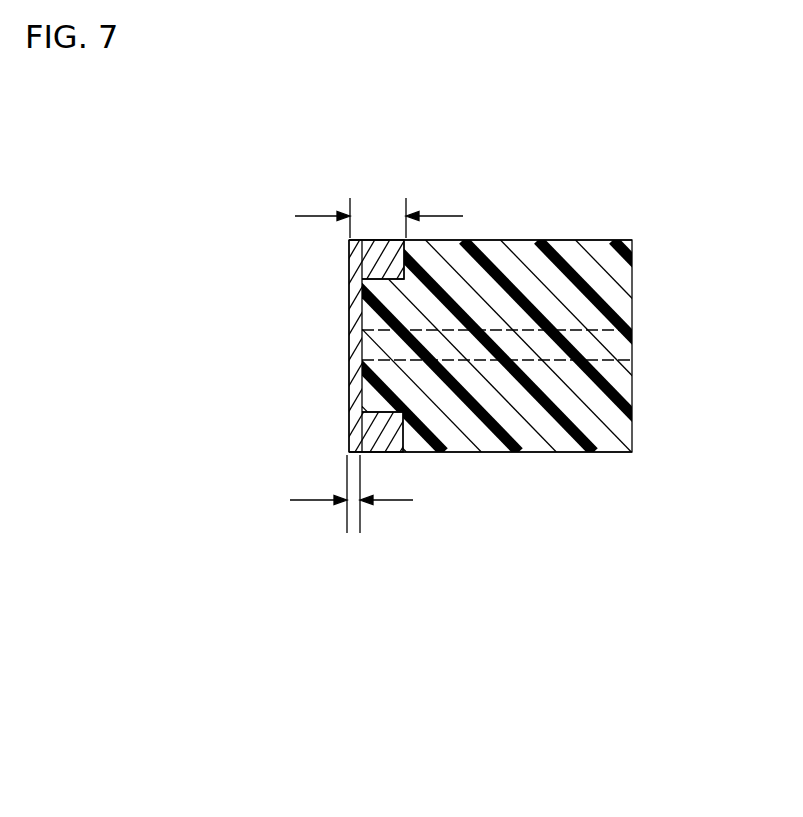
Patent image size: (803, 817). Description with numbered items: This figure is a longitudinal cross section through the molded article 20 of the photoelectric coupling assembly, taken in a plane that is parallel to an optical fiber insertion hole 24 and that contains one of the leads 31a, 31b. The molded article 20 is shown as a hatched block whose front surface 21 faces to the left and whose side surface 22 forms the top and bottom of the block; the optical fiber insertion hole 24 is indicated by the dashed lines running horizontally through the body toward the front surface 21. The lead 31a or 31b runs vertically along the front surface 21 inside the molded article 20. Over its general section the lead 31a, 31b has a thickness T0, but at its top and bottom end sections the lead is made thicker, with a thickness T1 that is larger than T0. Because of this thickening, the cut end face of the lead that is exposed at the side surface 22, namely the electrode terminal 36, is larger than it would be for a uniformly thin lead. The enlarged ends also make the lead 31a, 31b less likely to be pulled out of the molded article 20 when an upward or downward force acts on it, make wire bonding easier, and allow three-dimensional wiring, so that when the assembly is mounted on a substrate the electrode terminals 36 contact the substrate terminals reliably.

The main unit (molded article) 20 is at (502, 330).
The front surface 21 is at (350, 288).
The side surface 22 is at (527, 240).
The optical fiber insertion hole 24 is at (620, 345).
The lead 31a is at (350, 402).
The lead 31b is at (288, 346).
The electrode terminal 36 is at (370, 240).
The thickness of the general section of the lead T0 is at (349, 533).
The thickness of the top and bottom end sections of the lead T1 is at (388, 215).